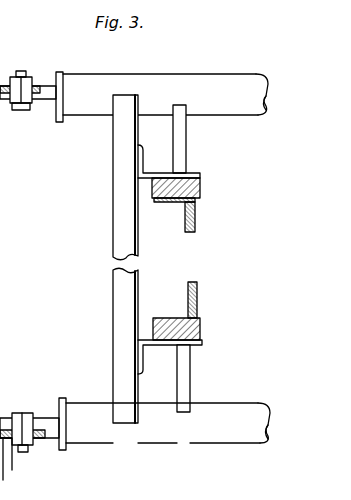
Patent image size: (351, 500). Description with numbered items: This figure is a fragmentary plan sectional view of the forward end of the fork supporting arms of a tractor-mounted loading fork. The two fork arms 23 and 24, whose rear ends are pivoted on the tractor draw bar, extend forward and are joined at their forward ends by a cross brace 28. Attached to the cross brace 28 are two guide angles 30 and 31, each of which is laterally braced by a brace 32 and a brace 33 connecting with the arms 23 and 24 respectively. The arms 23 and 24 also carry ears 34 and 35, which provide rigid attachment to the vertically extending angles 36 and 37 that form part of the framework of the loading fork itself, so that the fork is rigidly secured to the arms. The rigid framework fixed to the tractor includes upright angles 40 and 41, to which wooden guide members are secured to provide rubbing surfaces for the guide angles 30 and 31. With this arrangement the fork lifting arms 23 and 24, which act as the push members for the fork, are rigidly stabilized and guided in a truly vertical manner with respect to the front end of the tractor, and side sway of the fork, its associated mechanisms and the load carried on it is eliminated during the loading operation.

The fork arm 23 is at (210, 435).
The fork arm 24 is at (237, 114).
The cross brace 28 is at (120, 245).
The guide angle 30 is at (202, 343).
The guide angle 31 is at (200, 173).
The brace 32 is at (190, 385).
The brace 33 is at (186, 140).
The ear 34 is at (44, 424).
The ear 35 is at (40, 100).
The vertically extending angle 36 is at (4, 477).
The vertically extending angle 37 is at (0, 52).
The upright angle 40 is at (197, 300).
The upright angle 41 is at (195, 220).